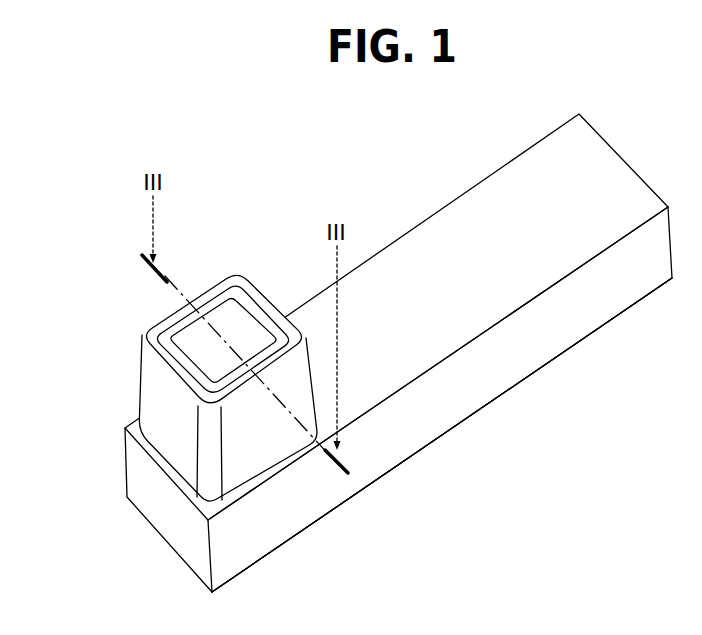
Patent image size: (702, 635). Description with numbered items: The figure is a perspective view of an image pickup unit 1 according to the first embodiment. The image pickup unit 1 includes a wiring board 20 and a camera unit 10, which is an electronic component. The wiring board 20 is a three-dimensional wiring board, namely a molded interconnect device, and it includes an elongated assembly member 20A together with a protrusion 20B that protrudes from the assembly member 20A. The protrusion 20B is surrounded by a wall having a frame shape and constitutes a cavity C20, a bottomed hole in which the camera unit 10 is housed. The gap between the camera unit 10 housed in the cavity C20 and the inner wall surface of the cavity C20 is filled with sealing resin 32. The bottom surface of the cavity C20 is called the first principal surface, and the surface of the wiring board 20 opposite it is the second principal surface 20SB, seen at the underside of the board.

The image pickup unit 1 is at (68, 191).
The camera unit 10 is at (165, 318).
The sealing resin 32 is at (163, 357).
The wiring board 20 is at (562, 458).
The assembly member 20A is at (475, 412).
The protrusion 20B is at (266, 474).
The second principal surface 20SB is at (288, 548).
The cavity C20 is at (233, 322).